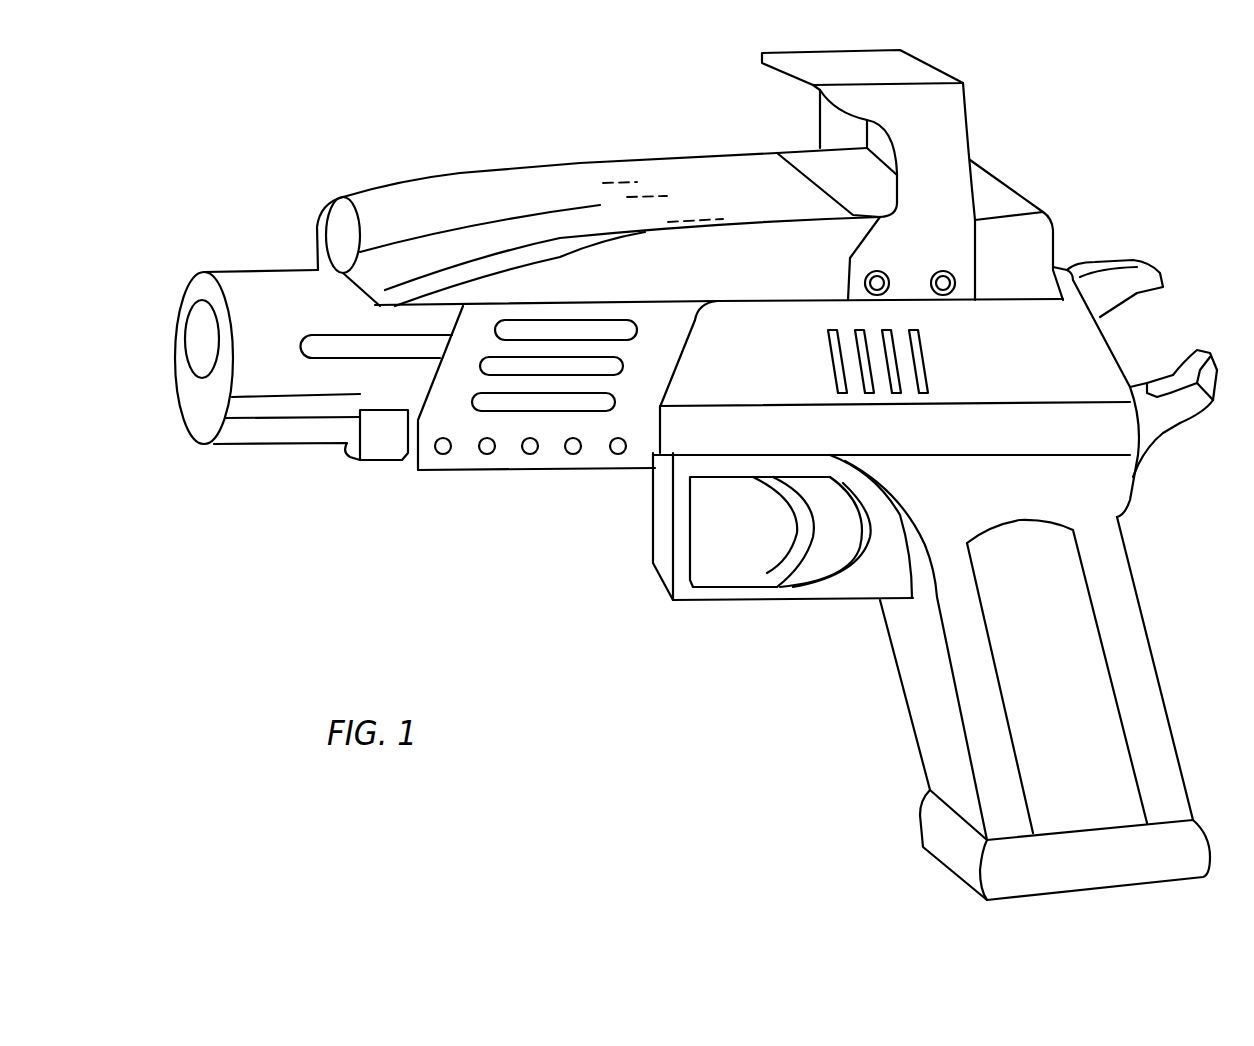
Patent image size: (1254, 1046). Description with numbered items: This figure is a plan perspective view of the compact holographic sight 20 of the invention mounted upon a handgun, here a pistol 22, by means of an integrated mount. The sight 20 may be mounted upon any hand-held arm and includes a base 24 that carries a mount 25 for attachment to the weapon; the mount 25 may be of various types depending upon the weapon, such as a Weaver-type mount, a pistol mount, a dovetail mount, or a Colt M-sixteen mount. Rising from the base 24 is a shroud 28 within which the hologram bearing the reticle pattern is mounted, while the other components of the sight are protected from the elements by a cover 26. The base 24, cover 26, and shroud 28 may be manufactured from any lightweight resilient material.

The holographic sight 20 is at (712, 139).
The pistol 22 is at (292, 383).
The base 24 is at (1017, 250).
The mount 25 is at (463, 430).
The cover 26 is at (393, 203).
The shroud 28 is at (940, 107).